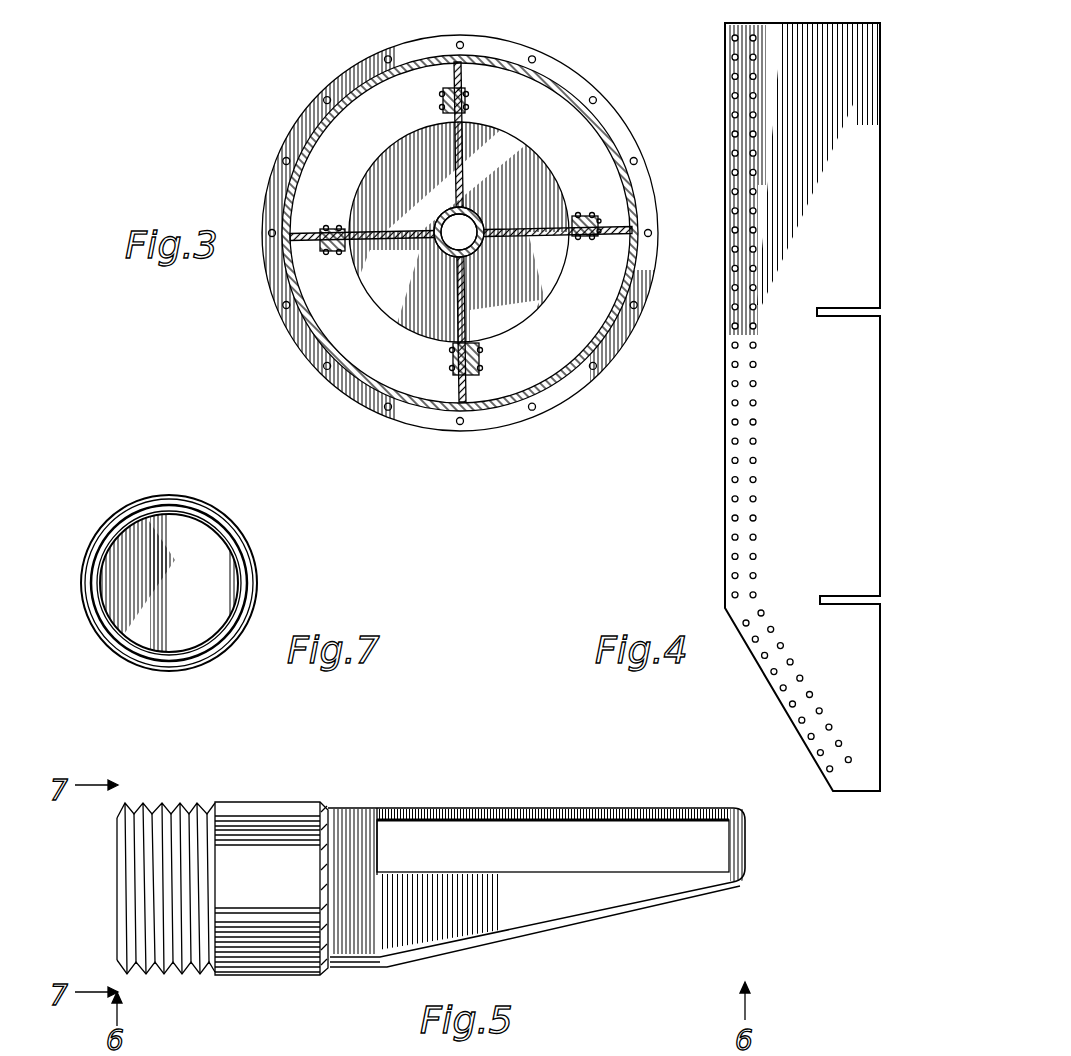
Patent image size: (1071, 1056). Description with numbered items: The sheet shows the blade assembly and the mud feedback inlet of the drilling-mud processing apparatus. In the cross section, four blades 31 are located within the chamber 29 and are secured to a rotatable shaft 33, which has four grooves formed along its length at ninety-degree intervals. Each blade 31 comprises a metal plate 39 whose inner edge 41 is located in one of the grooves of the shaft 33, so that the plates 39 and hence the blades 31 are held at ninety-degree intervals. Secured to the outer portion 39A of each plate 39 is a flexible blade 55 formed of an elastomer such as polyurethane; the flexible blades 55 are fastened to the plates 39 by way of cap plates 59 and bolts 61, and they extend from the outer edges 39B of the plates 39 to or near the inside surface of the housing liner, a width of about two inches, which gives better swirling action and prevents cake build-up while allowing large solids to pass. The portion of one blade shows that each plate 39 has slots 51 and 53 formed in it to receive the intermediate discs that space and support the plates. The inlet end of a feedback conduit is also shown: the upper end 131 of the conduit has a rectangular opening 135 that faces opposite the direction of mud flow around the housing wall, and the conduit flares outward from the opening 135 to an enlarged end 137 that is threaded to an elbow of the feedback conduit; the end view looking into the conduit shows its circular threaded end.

In FIG. 3, the chamber 29 is at (508, 375).
In FIG. 3, the blades 31 is at (337, 222).
In FIG. 3, the rotatable shaft 33 is at (482, 214).
In FIG. 3, the metal plate 39 is at (518, 226).
In FIG. 4, the metal plate 39 is at (792, 510).
In FIG. 4, the outer portion of plate 39A is at (732, 567).
In FIG. 4, the outer edge of plate 39B is at (728, 448).
In FIG. 3, the inner edge of plate 41 is at (493, 243).
In FIG. 4, the inner edge of plate 41 is at (880, 710).
In FIG. 4, the slot 51 is at (817, 312).
In FIG. 4, the slot 53 is at (820, 598).
In FIG. 3, the flexible blade 55 is at (636, 292).
In FIG. 3, the cap plates 59 is at (600, 221).
In FIG. 3, the bolts 61 is at (607, 327).
In FIG. 5, the upper end of feedback conduit 131 is at (328, 805).
In FIG. 5, the rectangular opening 135 is at (523, 840).
In FIG. 5, the enlarged end 137 is at (117, 880).